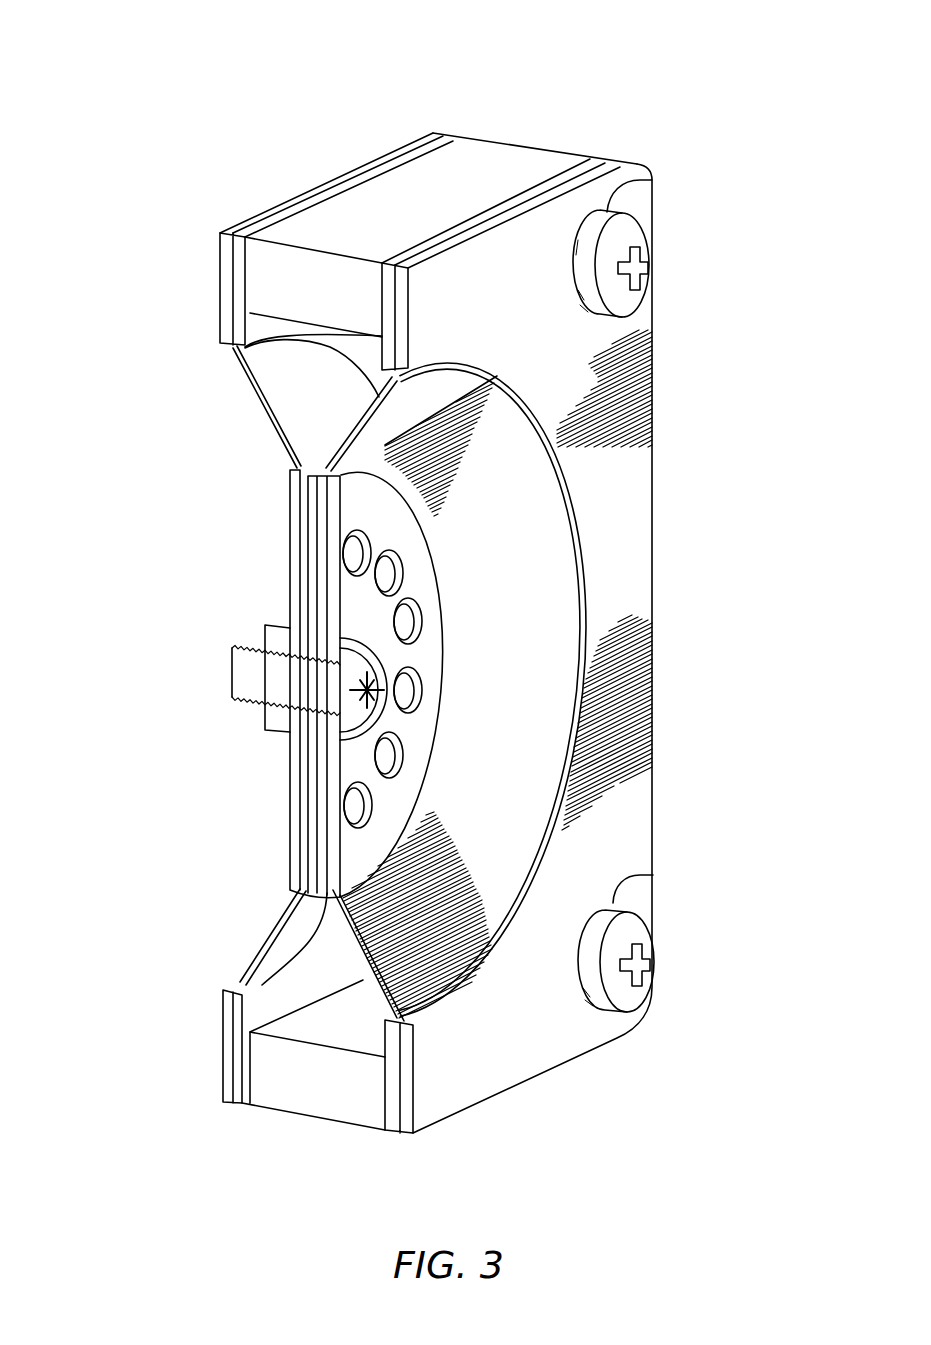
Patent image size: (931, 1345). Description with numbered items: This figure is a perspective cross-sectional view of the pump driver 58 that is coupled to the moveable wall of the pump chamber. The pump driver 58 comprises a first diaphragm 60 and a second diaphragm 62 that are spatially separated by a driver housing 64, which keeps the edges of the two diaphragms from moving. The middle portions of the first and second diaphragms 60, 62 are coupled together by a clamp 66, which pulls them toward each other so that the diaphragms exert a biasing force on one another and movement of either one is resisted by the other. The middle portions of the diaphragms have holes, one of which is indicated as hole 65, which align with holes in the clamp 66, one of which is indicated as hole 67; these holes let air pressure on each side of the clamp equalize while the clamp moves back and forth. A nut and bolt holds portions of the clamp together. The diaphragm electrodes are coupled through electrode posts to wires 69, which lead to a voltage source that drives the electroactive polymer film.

The pump driver 58 is at (303, 120).
The first diaphragm 60 is at (263, 410).
The second diaphragm 62 is at (390, 331).
The driver housing 64 is at (653, 520).
The hole 65 is at (360, 535).
The clamp 66 is at (220, 732).
The hole 67 is at (362, 604).
The wires 69 is at (740, 172).